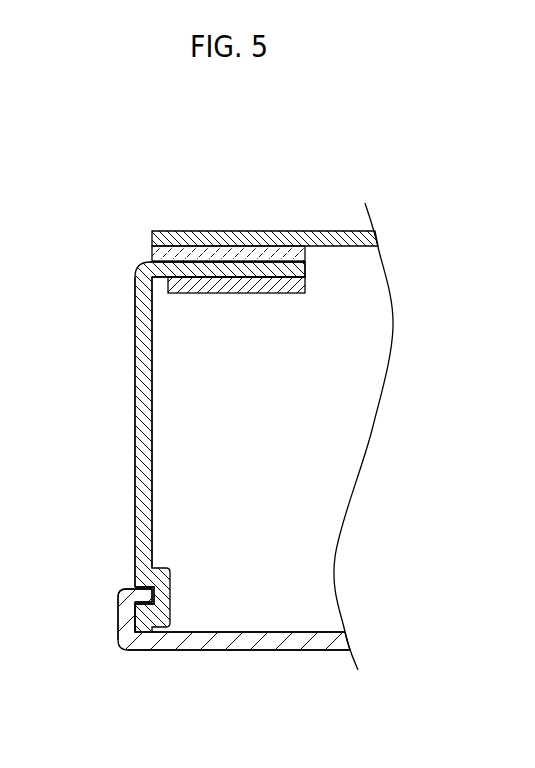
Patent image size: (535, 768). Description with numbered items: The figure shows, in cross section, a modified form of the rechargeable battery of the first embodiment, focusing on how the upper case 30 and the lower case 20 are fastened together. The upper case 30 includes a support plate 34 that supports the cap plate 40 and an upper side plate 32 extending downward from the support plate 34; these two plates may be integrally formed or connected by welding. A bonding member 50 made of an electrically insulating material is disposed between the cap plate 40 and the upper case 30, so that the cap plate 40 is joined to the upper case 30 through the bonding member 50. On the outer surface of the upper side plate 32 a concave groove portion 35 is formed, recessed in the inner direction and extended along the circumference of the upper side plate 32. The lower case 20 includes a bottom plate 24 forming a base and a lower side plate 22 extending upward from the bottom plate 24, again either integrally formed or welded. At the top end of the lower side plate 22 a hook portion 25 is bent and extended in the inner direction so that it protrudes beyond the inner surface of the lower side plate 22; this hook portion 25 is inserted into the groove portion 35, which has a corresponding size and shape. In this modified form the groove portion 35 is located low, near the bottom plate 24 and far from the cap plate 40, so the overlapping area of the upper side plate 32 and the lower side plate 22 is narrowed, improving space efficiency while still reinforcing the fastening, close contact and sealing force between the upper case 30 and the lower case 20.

The lower case 20 is at (202, 651).
The lower side plate 22 is at (135, 622).
The bottom plate 24 is at (242, 645).
The hook portion 25 is at (120, 597).
The upper case 30 is at (172, 406).
The upper side plate 32 is at (136, 428).
The support plate 34 is at (203, 270).
The groove portion 35 is at (137, 588).
The cap plate 40 is at (308, 241).
The bonding member 50 is at (250, 257).